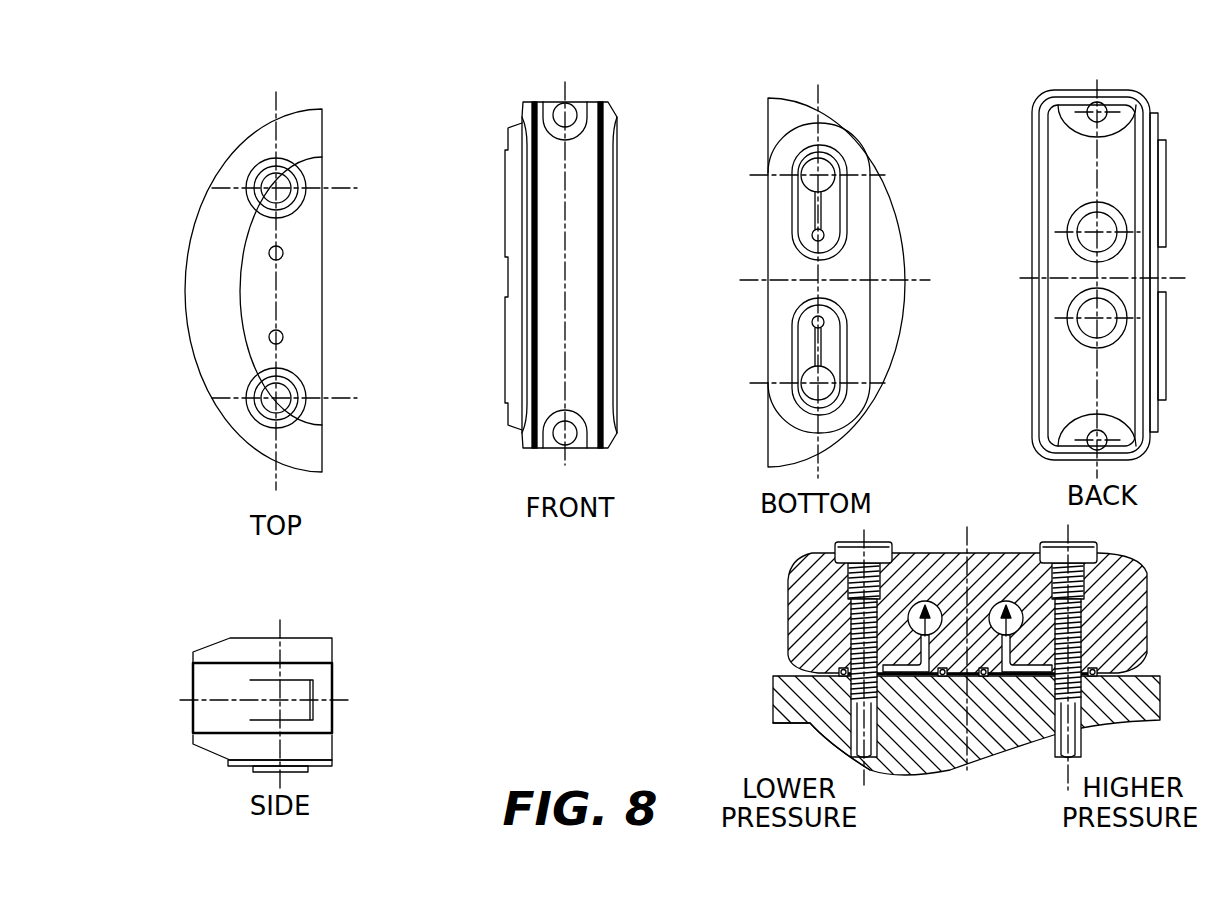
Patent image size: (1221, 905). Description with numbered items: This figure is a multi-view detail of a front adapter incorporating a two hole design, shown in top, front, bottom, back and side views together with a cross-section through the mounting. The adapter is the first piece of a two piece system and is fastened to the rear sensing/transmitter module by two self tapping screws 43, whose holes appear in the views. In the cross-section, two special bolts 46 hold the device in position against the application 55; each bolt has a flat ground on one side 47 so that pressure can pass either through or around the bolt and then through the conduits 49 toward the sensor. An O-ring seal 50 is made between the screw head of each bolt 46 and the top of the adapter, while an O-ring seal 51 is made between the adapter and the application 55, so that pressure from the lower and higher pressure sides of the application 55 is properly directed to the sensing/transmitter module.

The self tapping screw 43 is at (570, 113).
The special bolt 46 is at (884, 553).
The flat ground on one side 47 is at (855, 598).
The conduit 49 is at (870, 756).
The O-ring seal 50 is at (1102, 570).
The O-ring seal 51 is at (792, 322).
The application 55 is at (818, 705).